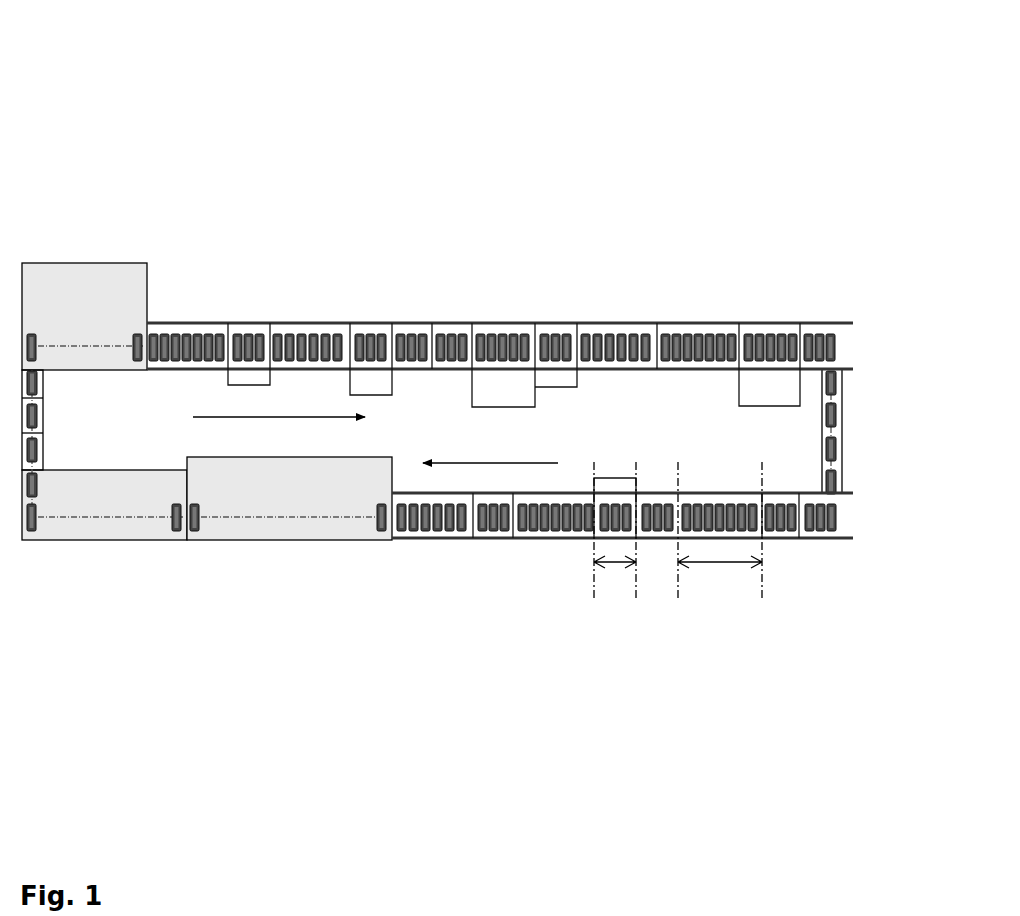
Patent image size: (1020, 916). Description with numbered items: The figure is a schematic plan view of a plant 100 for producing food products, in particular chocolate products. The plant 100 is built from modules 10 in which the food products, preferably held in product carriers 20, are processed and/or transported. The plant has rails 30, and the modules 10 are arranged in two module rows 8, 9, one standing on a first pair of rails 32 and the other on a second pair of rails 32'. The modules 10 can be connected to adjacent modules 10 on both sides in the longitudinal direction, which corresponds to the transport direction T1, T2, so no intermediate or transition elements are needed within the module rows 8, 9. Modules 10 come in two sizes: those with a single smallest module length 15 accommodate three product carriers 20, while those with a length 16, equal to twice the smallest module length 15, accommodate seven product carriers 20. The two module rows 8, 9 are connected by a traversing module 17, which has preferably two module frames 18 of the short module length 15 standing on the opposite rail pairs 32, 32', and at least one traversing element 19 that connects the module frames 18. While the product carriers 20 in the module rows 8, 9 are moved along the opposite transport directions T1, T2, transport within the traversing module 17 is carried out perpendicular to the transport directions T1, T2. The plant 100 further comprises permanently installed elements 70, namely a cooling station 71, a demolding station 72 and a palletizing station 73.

The plant 100 is at (315, 220).
The module row 8 is at (403, 293).
The rails 30 is at (427, 545).
The modules 10 is at (623, 343).
The product carriers 20 is at (697, 343).
The first pair of rails 32 is at (790, 253).
The second pair of rails 32' is at (826, 357).
The module frames 18 is at (835, 347).
The traversing module 17 is at (852, 428).
The traversing element 19 is at (835, 437).
The module row 9 is at (653, 563).
The smallest module length 15 is at (618, 563).
The length 16 is at (698, 563).
The permanently installed elements 70 is at (172, 607).
The cooling station 71 is at (262, 508).
The demolding station 72 is at (105, 497).
The palletizing station 73 is at (85, 283).
The transport direction T1 is at (297, 417).
The transport direction T2 is at (525, 463).